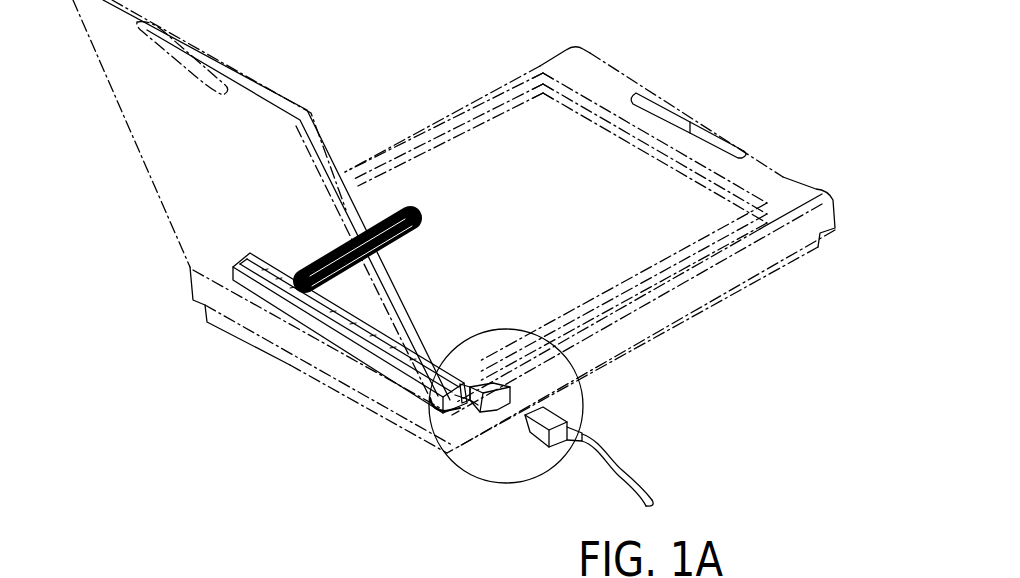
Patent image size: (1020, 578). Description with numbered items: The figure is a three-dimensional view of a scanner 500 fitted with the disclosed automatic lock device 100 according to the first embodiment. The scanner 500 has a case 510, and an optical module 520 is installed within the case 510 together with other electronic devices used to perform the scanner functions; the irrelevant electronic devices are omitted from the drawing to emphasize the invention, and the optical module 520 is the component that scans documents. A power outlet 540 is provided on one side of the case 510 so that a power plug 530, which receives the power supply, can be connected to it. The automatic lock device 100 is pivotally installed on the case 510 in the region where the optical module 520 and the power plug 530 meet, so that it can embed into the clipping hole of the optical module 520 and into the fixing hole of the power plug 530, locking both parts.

The scanner 500 is at (716, 90).
The case 510 is at (788, 172).
The optical module 520 is at (353, 338).
The automatic lock device 100 is at (468, 446).
The power plug 530 is at (570, 418).
The power outlet 540 is at (505, 407).